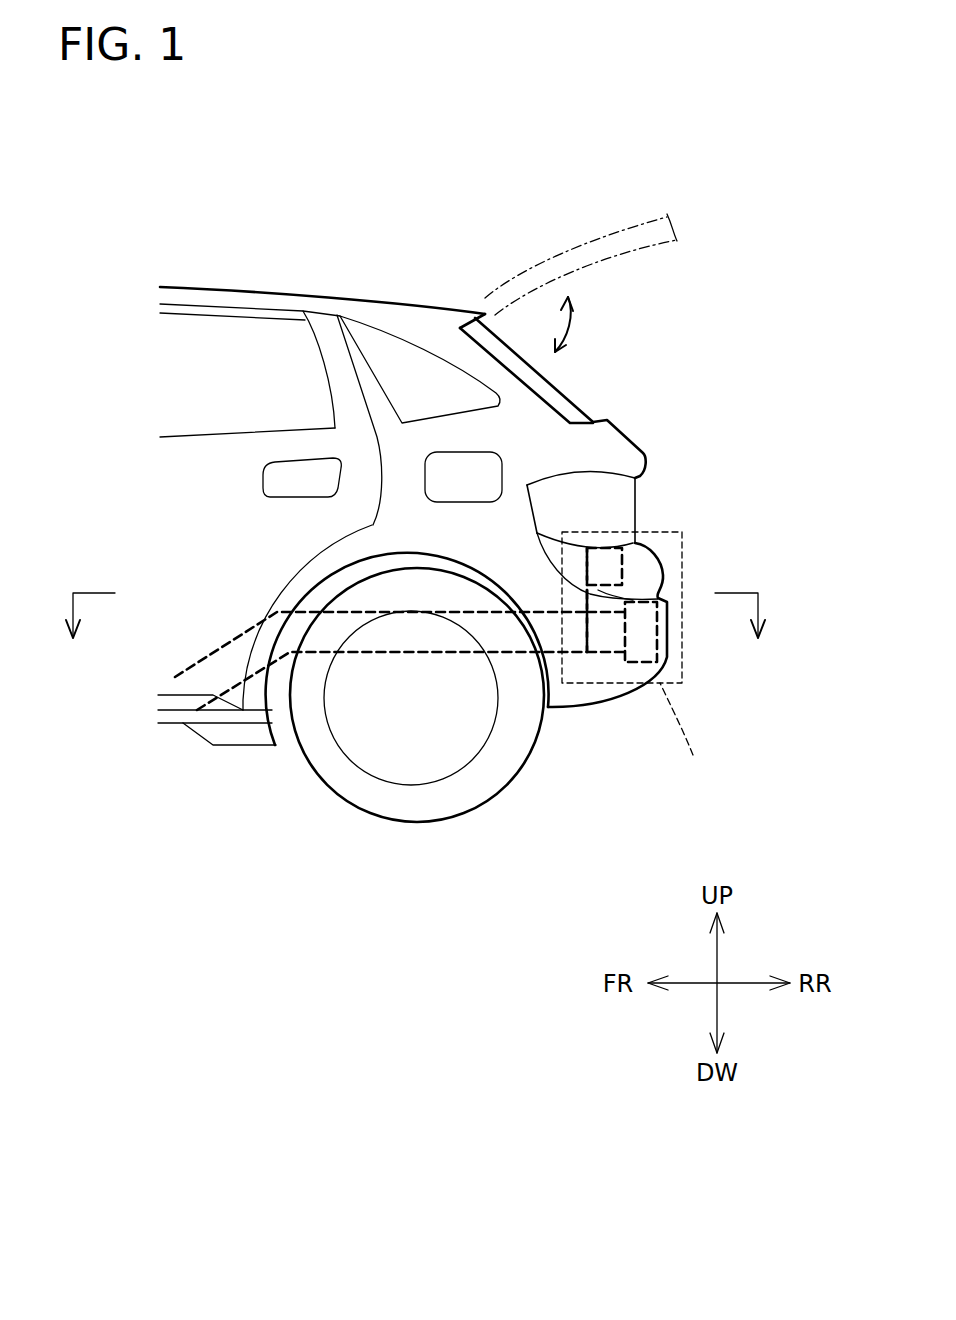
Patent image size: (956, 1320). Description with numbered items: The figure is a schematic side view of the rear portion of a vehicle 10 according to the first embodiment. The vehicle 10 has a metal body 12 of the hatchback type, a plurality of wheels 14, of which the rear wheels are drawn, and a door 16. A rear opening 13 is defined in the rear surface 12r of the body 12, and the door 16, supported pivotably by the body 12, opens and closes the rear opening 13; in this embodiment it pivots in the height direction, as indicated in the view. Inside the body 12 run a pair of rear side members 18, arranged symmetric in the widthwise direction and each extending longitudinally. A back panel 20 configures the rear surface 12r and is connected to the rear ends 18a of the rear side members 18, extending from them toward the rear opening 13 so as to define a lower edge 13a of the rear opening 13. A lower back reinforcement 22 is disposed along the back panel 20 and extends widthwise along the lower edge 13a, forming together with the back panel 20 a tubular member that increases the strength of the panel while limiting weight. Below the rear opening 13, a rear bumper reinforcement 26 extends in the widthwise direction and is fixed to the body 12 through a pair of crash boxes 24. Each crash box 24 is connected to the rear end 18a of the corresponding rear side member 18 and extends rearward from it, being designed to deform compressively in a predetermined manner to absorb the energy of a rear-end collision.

The vehicle 10 is at (743, 227).
The body 12 is at (265, 297).
The rear surface 12r is at (749, 420).
The rear opening 13 is at (550, 405).
The lower edge 13a is at (608, 545).
The wheels 14 is at (320, 758).
The door 16 is at (550, 373).
The rear side members 18 is at (395, 653).
The rear ends 18a is at (590, 633).
The back panel 20 is at (590, 596).
The lower back reinforcement 22 is at (623, 563).
The crash boxes 24 is at (612, 638).
The rear bumper reinforcement 26 is at (650, 647).